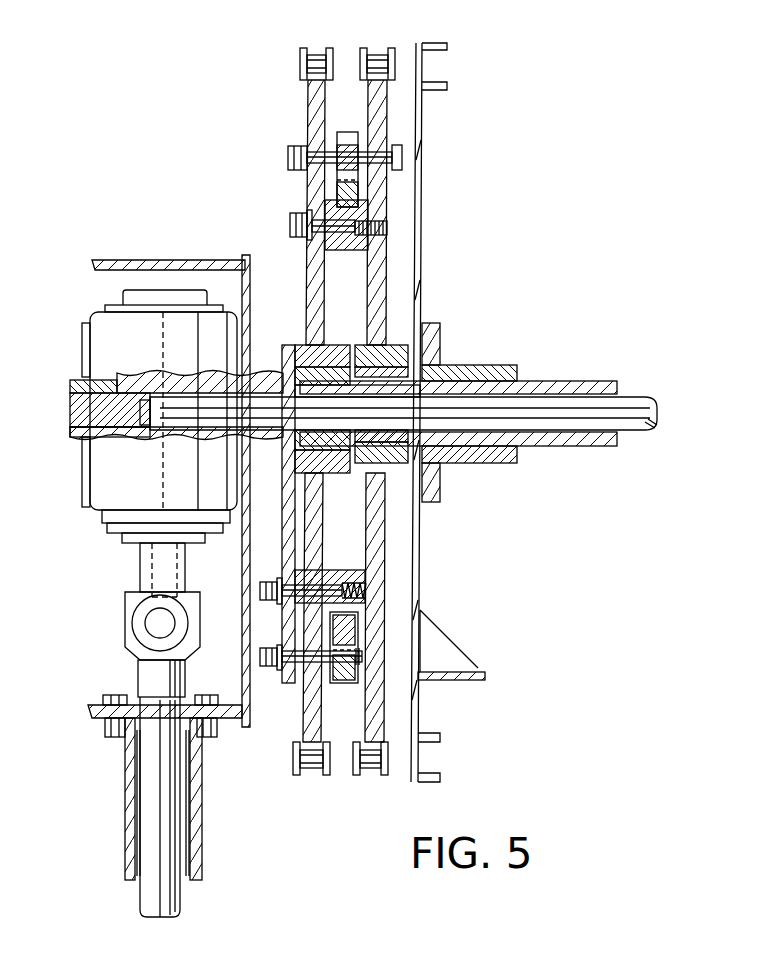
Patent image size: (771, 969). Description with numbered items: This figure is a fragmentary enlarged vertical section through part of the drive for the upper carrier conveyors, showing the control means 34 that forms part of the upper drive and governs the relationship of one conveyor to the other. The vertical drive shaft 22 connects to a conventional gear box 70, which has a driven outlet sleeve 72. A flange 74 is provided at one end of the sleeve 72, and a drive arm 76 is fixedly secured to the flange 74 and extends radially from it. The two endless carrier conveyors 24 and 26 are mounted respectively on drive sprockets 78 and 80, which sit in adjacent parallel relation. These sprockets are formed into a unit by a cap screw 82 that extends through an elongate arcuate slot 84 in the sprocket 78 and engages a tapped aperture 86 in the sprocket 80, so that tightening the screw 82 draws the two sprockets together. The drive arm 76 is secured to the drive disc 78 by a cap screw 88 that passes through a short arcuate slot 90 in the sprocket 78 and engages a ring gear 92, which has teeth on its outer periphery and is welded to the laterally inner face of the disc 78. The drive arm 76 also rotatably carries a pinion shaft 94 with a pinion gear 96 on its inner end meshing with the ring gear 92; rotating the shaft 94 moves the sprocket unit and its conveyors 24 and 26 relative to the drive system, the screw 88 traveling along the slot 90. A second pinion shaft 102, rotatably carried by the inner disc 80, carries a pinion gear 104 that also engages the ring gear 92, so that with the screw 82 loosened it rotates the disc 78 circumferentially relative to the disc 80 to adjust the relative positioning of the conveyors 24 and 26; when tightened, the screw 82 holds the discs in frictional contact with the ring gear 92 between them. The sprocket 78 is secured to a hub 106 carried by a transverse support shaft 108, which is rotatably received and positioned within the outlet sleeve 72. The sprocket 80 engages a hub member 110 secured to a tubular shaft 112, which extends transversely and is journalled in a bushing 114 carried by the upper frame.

The drive shaft 22 is at (125, 618).
The carrier conveyor 24 is at (316, 48).
The carrier conveyor 26 is at (381, 48).
The control means 34 is at (452, 262).
The gear box 70 is at (90, 482).
The outlet sleeve 72 is at (70, 405).
The flange 74 is at (286, 352).
The drive arm 76 is at (282, 511).
The drive sprocket 78 is at (308, 95).
The drive sprocket 80 is at (390, 411).
The cap screw 82 is at (291, 225).
The arcuate slot 84 is at (313, 208).
The tapped aperture 86 is at (388, 228).
The cap screw 88 is at (366, 590).
The arcuate slot 90 is at (325, 580).
The ring gear 92 is at (350, 572).
The pinion shaft 94 is at (291, 684).
The pinion gear 96 is at (352, 684).
The second pinion shaft 102 is at (404, 158).
The pinion gear 104 is at (354, 133).
The hub 106 is at (334, 345).
The support shaft 108 is at (638, 397).
The hub member 110 is at (374, 478).
The tubular shaft 112 is at (560, 380).
The bushing 114 is at (506, 365).